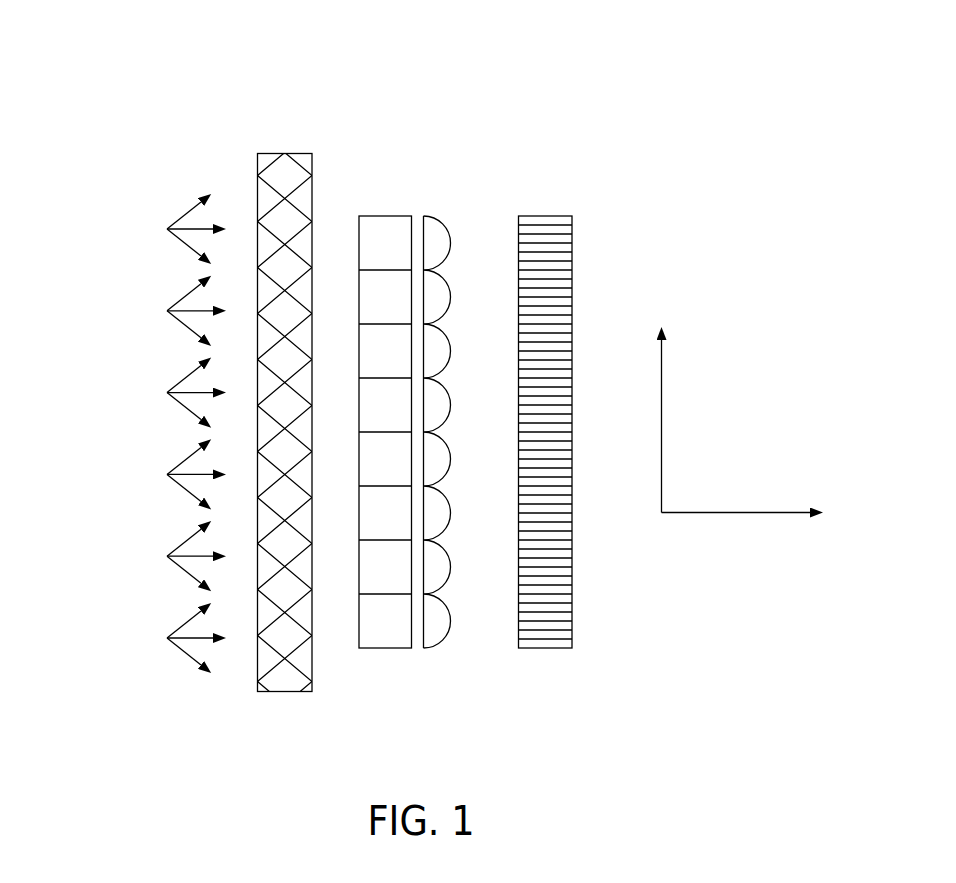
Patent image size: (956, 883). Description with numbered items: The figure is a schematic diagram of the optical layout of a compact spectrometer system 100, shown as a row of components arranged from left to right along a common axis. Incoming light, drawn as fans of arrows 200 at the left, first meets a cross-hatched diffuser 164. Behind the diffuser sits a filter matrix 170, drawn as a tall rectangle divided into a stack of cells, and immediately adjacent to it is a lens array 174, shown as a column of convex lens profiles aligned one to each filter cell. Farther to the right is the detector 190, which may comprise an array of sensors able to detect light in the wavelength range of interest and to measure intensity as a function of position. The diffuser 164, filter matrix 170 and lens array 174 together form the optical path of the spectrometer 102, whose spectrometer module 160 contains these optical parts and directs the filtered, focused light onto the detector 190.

The compact spectrometer system 100 is at (105, 47).
The spectrometer 102 is at (227, 47).
The spectrometer module 160 is at (362, 47).
The diffuser 164 is at (275, 172).
The filter matrix 170 is at (386, 630).
The lens array 174 is at (440, 628).
The detector 190 is at (545, 648).
The light rays 200 is at (187, 212).